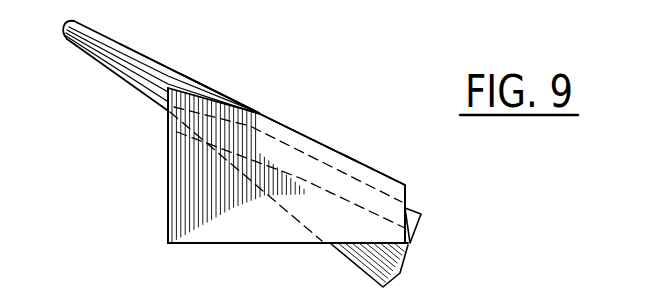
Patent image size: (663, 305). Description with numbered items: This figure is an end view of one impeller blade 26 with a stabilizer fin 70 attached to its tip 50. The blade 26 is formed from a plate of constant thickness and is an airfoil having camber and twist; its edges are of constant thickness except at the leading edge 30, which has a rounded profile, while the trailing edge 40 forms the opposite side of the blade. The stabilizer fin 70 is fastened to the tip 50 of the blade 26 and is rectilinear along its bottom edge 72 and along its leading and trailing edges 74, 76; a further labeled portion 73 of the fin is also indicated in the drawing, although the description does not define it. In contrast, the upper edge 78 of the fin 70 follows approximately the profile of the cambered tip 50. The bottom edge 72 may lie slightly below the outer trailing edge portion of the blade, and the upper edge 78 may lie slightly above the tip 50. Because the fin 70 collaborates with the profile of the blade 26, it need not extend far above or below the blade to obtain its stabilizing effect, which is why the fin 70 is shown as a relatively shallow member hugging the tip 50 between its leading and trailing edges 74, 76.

The blade 26 is at (166, 70).
The leading edge 30 is at (110, 70).
The trailing edge 40 is at (214, 83).
The tip 50 is at (240, 148).
The stabilizer fin 70 is at (183, 193).
The bottom edge 72 is at (248, 244).
The inclined top surface 73 is at (318, 143).
The leading edge of fin 74 is at (168, 163).
The trailing edge of fin 76 is at (413, 238).
The upper edge 78 is at (377, 170).